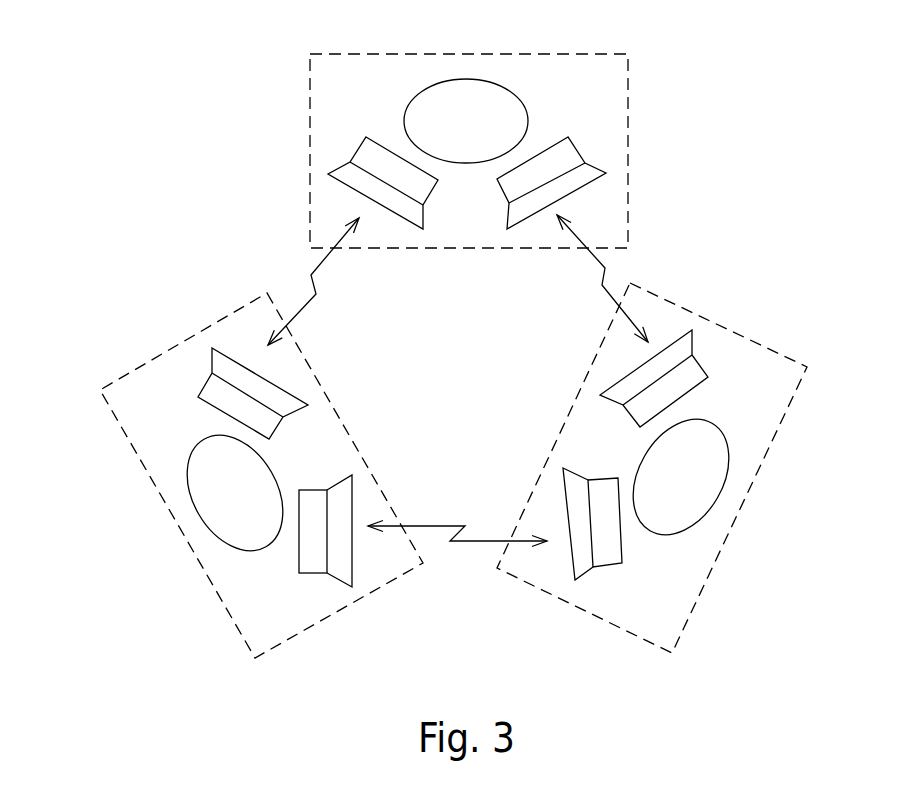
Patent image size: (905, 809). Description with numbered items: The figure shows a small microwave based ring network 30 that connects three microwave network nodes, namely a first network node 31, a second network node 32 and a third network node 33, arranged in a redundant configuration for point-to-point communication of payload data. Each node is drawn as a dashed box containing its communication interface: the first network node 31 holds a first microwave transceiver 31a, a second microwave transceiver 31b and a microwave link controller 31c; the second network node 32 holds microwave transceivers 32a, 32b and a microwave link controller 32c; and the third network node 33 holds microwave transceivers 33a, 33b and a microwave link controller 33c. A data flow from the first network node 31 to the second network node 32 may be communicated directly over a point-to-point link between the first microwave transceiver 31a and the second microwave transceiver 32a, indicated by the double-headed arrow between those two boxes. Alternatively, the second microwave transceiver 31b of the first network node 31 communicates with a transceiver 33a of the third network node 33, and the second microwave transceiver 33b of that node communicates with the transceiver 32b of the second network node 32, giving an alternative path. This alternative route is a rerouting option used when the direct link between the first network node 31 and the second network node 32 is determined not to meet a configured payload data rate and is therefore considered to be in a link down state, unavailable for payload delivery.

The microwave based ring network 30 is at (174, 109).
The first network node 31 is at (331, 97).
The first microwave transceiver of the first network node 31a is at (353, 190).
The second microwave transceiver of the first network node 31b is at (582, 163).
The microwave link controller of the first network node 31c is at (528, 108).
The second network node 32 is at (163, 390).
The second microwave transceiver of the second network node 32a is at (261, 370).
The microwave transceiver of the second network node 32b is at (300, 557).
The microwave link controller of the second network node 32c is at (187, 483).
The third network node 33 is at (745, 402).
The microwave transceiver of the third network node 33a is at (653, 347).
The second microwave transceiver of the third network node 33b is at (572, 552).
The microwave link controller of the third network node 33c is at (725, 488).